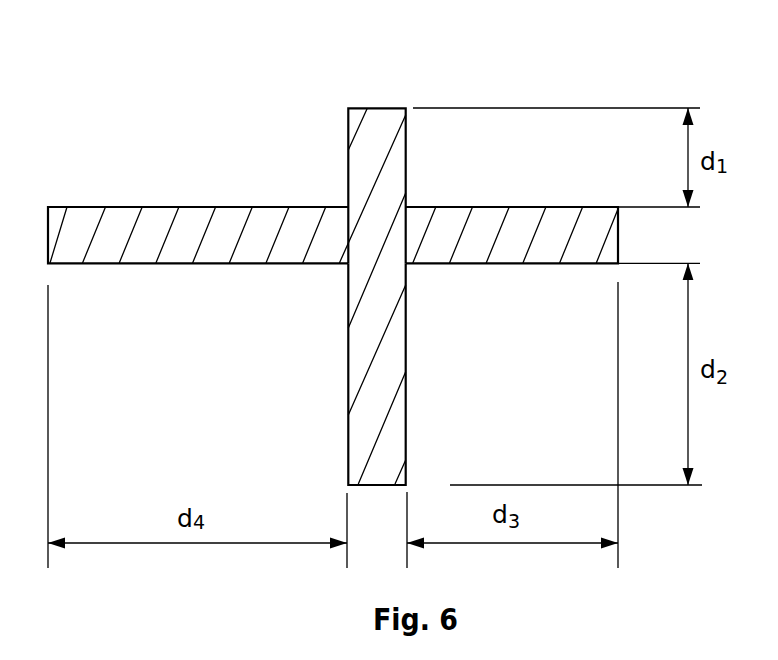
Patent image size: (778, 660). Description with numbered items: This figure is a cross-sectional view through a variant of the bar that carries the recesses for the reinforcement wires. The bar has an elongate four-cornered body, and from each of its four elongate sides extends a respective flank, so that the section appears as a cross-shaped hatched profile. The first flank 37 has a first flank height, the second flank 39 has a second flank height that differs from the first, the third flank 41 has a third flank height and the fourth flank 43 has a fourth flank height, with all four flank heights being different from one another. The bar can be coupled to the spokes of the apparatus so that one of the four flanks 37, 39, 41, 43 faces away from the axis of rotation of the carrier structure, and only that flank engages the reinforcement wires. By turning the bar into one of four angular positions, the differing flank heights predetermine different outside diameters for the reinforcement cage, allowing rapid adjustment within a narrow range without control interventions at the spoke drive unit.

The first flank 37 is at (368, 162).
The second flank 39 is at (397, 345).
The third flank 41 is at (530, 228).
The fourth flank 43 is at (118, 232).